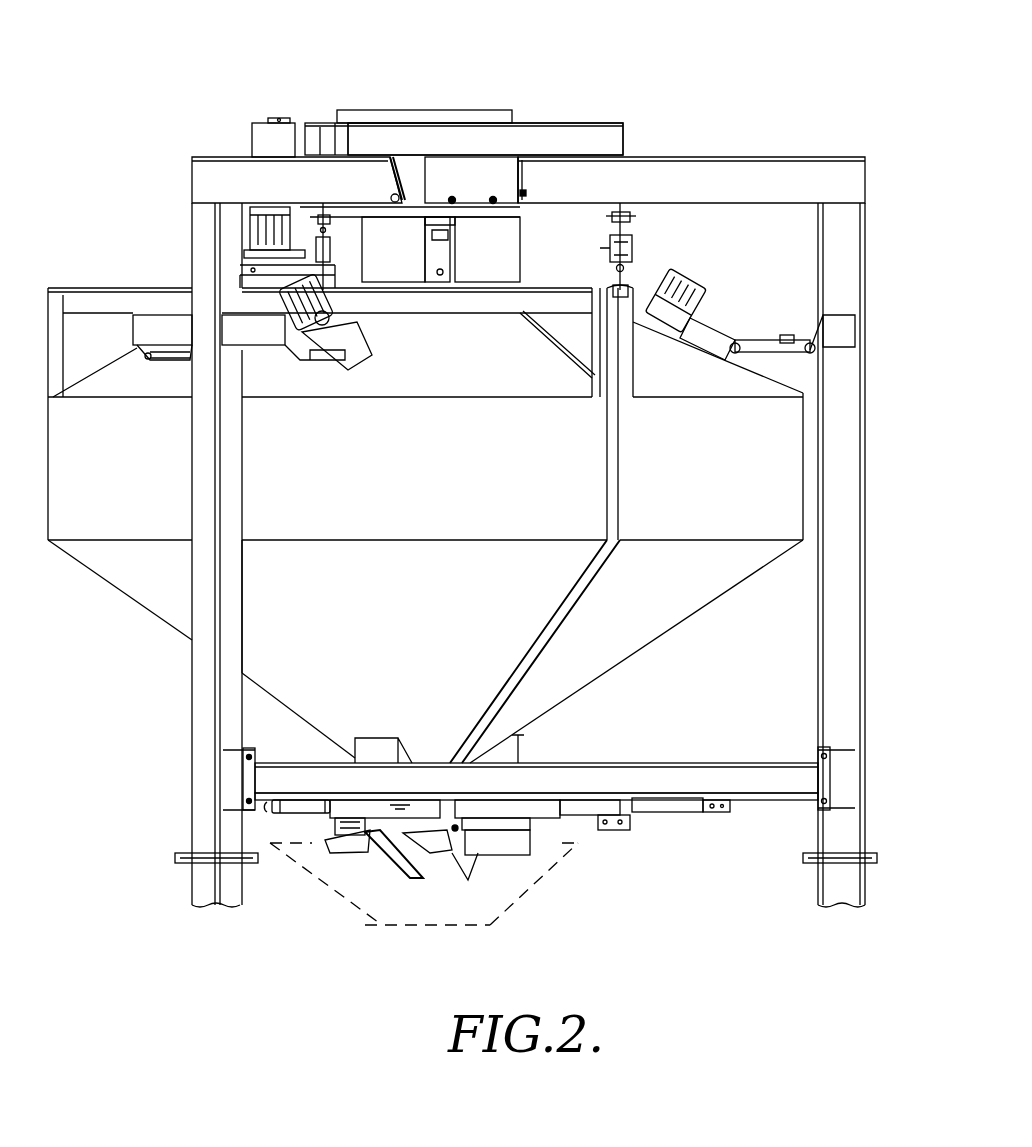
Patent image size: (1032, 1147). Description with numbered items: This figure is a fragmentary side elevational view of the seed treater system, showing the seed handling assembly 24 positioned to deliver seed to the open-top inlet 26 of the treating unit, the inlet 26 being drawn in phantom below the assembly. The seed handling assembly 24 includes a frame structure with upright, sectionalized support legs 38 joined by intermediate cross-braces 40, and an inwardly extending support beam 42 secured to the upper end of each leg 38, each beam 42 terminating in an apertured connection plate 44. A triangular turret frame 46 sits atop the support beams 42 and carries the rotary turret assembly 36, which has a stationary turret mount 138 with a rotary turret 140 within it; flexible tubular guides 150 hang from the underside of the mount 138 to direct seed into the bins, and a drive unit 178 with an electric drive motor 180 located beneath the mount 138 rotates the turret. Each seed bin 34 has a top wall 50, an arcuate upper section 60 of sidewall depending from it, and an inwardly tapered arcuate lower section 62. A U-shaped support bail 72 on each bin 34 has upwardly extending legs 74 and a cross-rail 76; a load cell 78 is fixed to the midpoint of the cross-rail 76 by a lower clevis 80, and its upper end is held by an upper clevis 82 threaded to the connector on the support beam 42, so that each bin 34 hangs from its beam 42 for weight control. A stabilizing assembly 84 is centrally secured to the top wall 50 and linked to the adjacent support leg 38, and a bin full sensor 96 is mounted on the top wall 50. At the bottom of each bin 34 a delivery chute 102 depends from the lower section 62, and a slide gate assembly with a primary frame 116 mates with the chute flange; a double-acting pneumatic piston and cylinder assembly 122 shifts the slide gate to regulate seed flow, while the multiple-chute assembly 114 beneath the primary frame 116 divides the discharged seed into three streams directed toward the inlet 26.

The seed handling assembly 24 is at (506, 477).
The inlet 26 is at (500, 890).
The seed bin 34 is at (708, 633).
The rotary turret assembly 36 is at (480, 80).
The support leg 38 is at (195, 705).
The cross-brace 40 is at (762, 772).
The support beam 42 is at (233, 163).
The connection plate 44 is at (392, 188).
The turret frame 46 is at (594, 112).
The top wall 50 is at (431, 394).
The arcuate upper section 60 is at (372, 538).
The arcuate lower section 62 is at (140, 592).
The support bail 72 is at (98, 280).
The leg 74 is at (65, 346).
The cross-rail 76 is at (428, 302).
The load cell 78 is at (632, 250).
The lower clevis 80 is at (615, 290).
The upper clevis 82 is at (630, 214).
The stabilizing assembly 84 is at (736, 326).
The bin full sensor 96 is at (682, 276).
The delivery chute 102 is at (407, 735).
The multiple-chute assembly 114 is at (415, 888).
The primary frame 116 is at (315, 833).
The pneumatic piston and cylinder assembly 122 is at (309, 805).
The turret mount 138 is at (315, 119).
The rotary turret 140 is at (431, 104).
The flexible tubular guide 150 is at (510, 250).
The drive unit 178 is at (244, 222).
The electric drive motor 180 is at (253, 140).